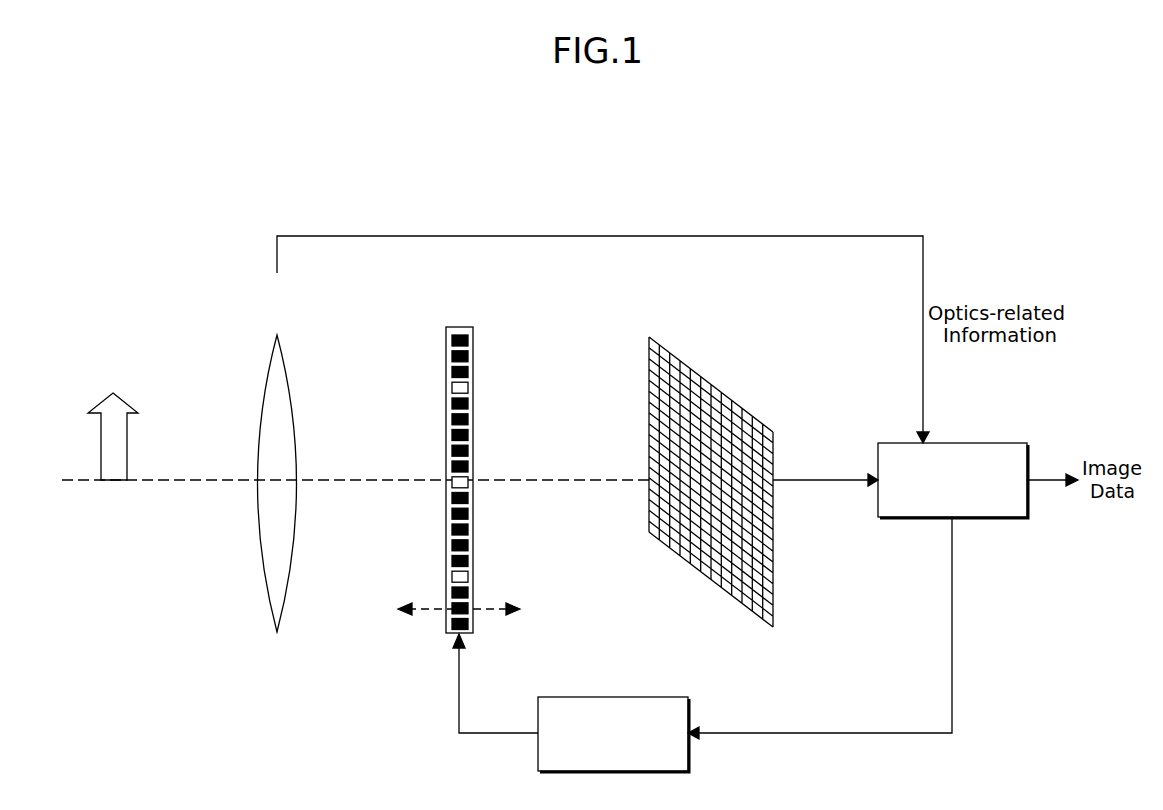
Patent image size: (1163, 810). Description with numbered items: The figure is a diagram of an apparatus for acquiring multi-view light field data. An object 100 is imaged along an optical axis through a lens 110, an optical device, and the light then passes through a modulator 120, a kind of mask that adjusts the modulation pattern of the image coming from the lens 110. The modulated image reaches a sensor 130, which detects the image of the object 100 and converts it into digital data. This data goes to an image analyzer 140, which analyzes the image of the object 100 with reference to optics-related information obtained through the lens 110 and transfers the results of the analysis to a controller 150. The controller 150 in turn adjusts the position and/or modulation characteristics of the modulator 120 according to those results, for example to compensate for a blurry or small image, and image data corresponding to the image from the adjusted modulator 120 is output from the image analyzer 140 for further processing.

The object 100 is at (113, 391).
The lens 110 is at (278, 333).
The modulator 120 is at (472, 300).
The sensor 130 is at (672, 313).
The image analyzer 140 is at (985, 442).
The controller 150 is at (647, 696).